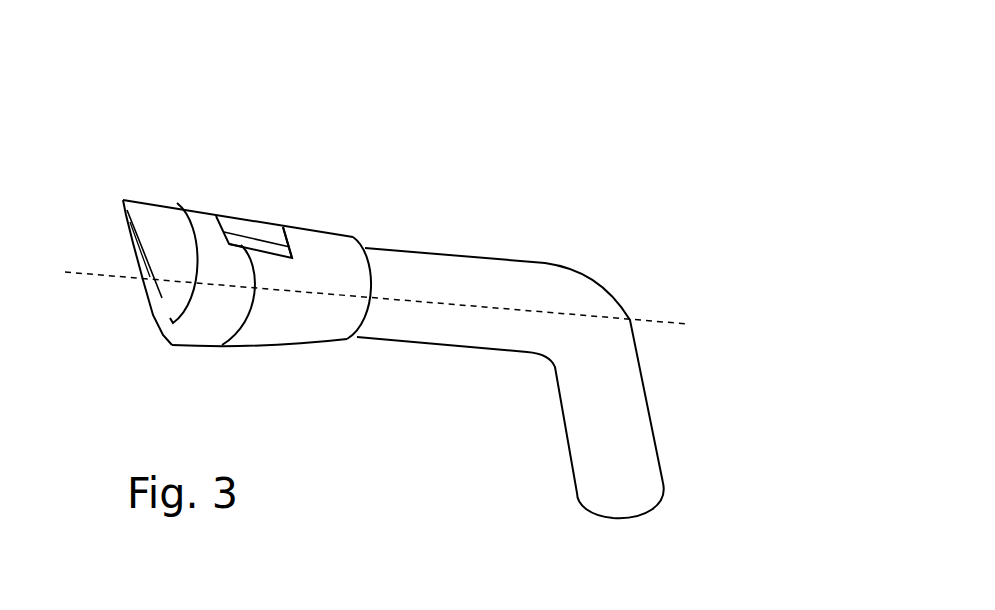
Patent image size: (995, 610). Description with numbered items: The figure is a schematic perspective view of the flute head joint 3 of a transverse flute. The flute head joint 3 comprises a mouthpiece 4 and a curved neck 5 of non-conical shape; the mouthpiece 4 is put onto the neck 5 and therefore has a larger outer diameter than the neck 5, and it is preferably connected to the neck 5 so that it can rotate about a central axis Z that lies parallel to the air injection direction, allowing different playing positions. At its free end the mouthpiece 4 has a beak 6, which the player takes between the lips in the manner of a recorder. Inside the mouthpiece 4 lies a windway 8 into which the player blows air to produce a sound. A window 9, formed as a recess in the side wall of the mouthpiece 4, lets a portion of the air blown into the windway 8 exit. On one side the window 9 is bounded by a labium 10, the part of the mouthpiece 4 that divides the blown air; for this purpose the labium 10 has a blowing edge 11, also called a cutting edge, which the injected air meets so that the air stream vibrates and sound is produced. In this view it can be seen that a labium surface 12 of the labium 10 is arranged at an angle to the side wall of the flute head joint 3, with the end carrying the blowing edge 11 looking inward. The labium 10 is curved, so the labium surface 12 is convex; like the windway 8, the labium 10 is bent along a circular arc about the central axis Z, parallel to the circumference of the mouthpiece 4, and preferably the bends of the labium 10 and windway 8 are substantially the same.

The flute head joint 3 is at (488, 102).
The mouthpiece 4 is at (334, 191).
The neck 5 is at (551, 221).
The beak 6 is at (157, 217).
The windway 8 is at (125, 216).
The window 9 is at (253, 202).
The labium 10 is at (273, 237).
The blowing edge 11 is at (243, 243).
The labium surface 12 is at (278, 248).
The central axis Z is at (670, 323).